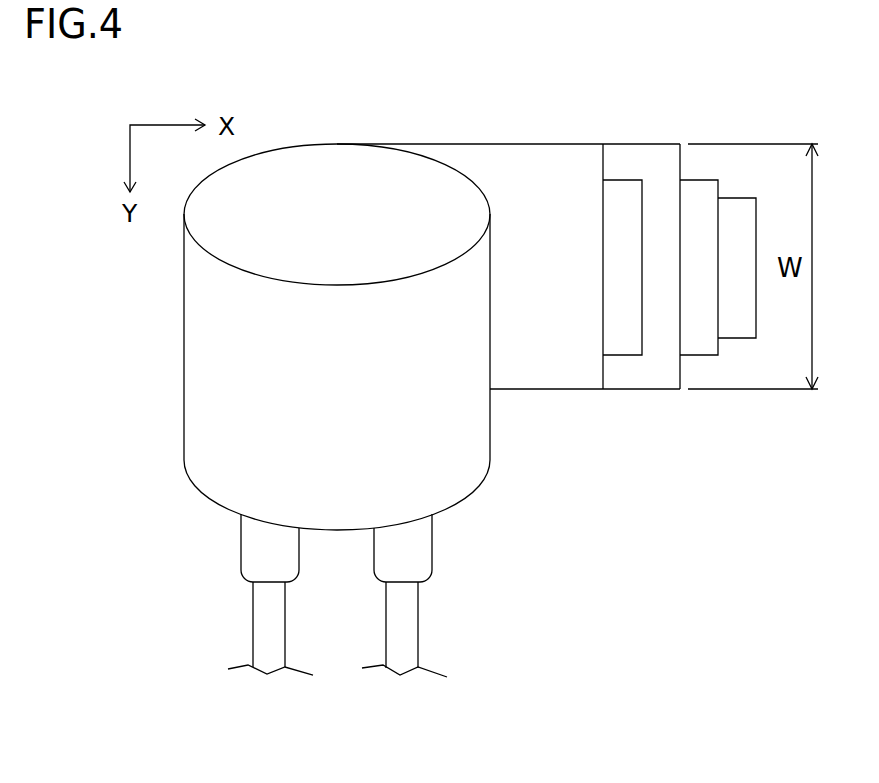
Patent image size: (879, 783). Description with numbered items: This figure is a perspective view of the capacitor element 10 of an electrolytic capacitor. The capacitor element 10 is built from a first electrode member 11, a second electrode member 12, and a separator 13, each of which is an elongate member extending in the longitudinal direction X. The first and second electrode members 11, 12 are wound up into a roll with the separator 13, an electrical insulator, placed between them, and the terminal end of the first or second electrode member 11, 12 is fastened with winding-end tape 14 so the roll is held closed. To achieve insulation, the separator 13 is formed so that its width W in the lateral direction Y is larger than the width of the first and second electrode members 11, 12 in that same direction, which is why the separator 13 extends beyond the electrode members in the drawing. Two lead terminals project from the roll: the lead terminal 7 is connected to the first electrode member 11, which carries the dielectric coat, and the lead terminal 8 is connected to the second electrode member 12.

The capacitor element 10 is at (468, 127).
The lead terminal 7 is at (258, 557).
The lead terminal 8 is at (413, 560).
The first electrode member 11 is at (623, 332).
The second electrode member 12 is at (693, 338).
The separator 13 is at (567, 365).
The winding-end tape 14 is at (735, 197).